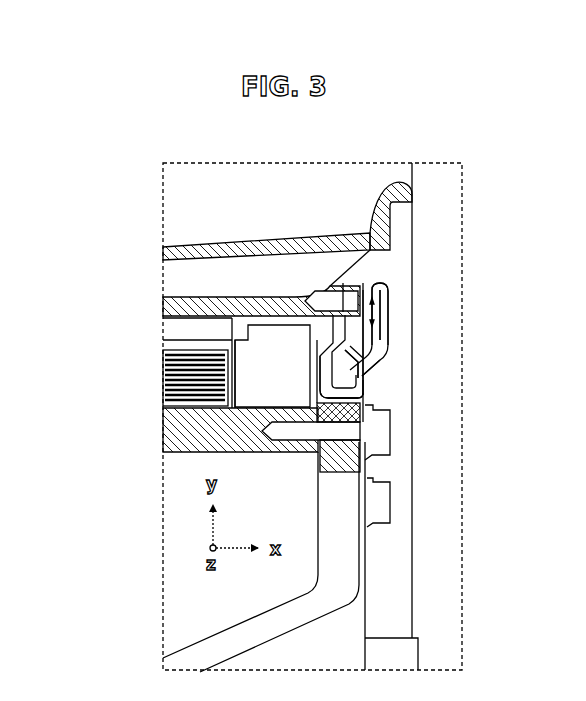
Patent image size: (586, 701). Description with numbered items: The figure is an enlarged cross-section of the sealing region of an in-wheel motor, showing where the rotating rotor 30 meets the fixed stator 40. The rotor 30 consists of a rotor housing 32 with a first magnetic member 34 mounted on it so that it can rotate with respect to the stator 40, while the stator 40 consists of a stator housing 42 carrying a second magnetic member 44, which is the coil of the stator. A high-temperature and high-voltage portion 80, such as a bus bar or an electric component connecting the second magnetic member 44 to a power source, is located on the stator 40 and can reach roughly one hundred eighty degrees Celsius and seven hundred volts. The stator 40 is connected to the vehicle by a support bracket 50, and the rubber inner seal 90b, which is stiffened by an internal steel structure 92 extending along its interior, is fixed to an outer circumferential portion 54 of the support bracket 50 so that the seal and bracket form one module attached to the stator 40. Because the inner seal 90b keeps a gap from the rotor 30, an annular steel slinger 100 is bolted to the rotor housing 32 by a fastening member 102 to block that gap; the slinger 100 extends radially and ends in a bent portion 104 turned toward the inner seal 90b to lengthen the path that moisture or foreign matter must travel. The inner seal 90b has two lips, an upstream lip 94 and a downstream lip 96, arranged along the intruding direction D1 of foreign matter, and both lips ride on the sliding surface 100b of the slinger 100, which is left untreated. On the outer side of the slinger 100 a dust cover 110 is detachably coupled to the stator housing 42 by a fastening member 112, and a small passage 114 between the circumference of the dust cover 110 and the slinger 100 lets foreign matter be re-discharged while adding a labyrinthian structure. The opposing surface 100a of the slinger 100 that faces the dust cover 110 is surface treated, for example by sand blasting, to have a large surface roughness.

The rotor 30 is at (56, 320).
The rotor housing 32 is at (163, 300).
The first magnetic member 34 is at (190, 332).
The stator 40 is at (55, 400).
The second magnetic member 44 is at (178, 362).
The stator housing 42 is at (182, 432).
The high-temperature and high-voltage portion 80 is at (276, 335).
The internal structure 92 is at (317, 335).
The inner seal 90b is at (345, 290).
The slinger 100 is at (365, 280).
The fastening member 102 is at (347, 283).
The intruding direction D1 is at (384, 292).
The passage 114 is at (382, 285).
The dust cover 110 is at (372, 300).
The opposing surface 100a is at (387, 320).
The downstream lip 96 is at (365, 363).
The upstream lip 94 is at (352, 393).
The bent portion 104 is at (352, 360).
The sliding surface 100b is at (390, 413).
The fastening member 112 is at (373, 432).
The outer circumferential portion 54 is at (365, 467).
The support bracket 50 is at (347, 538).